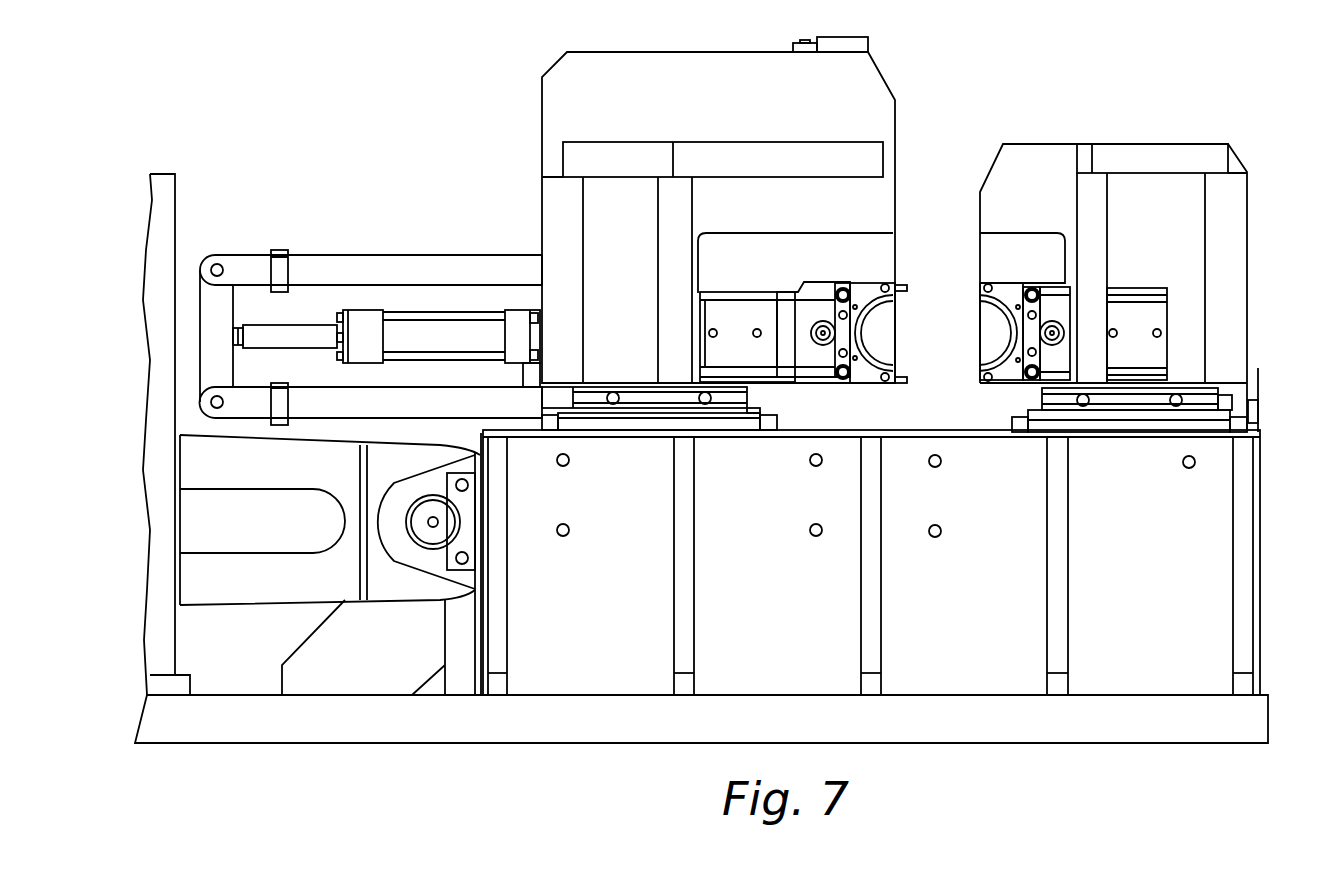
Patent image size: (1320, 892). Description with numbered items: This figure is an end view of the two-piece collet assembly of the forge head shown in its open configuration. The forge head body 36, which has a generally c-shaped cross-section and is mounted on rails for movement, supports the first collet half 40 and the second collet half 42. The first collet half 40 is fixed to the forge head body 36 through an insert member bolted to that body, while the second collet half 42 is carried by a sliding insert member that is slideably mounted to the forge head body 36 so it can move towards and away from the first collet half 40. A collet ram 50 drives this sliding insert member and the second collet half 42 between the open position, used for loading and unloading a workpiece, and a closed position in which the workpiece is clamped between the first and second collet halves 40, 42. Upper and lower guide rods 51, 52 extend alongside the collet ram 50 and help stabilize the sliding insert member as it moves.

The forge head body 36 is at (863, 85).
The first collet half 40 is at (980, 288).
The second collet half 42 is at (897, 298).
The collet ram 50 is at (440, 333).
The upper guide rod 51 is at (331, 263).
The lower guide rod 52 is at (435, 403).